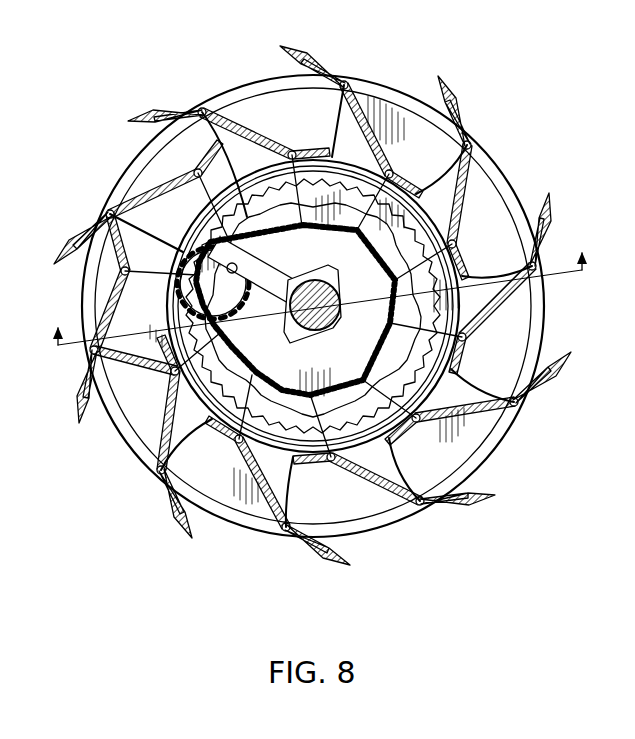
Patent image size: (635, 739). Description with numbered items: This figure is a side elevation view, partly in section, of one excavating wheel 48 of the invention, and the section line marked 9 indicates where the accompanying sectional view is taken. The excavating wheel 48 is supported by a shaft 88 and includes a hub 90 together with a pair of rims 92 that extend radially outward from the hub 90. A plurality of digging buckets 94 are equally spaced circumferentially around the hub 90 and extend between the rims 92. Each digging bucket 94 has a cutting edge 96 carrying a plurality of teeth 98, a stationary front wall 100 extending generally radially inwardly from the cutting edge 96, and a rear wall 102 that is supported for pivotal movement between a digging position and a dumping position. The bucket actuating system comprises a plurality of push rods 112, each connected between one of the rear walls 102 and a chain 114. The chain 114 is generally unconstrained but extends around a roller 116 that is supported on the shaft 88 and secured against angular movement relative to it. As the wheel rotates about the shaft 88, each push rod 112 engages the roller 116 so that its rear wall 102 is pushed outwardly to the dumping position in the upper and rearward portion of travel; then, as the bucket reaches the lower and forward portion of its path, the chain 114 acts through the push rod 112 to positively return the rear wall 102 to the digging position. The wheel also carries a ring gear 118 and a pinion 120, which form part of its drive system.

The excavating wheel 48 is at (430, 572).
The shaft 88 is at (332, 317).
The hub 90 is at (280, 366).
The rim 92 is at (490, 453).
The digging bucket 94 is at (282, 112).
The cutting edge 96 is at (288, 56).
The teeth 98 is at (456, 86).
The stationary front wall 100 is at (330, 142).
The rear wall 102 is at (356, 98).
The push rod 112 is at (290, 170).
The chain 114 is at (304, 392).
The roller 116 is at (260, 251).
The ring gear 118 is at (400, 236).
The pinion 120 is at (214, 314).
The section line 9- 9 is at (318, 285).